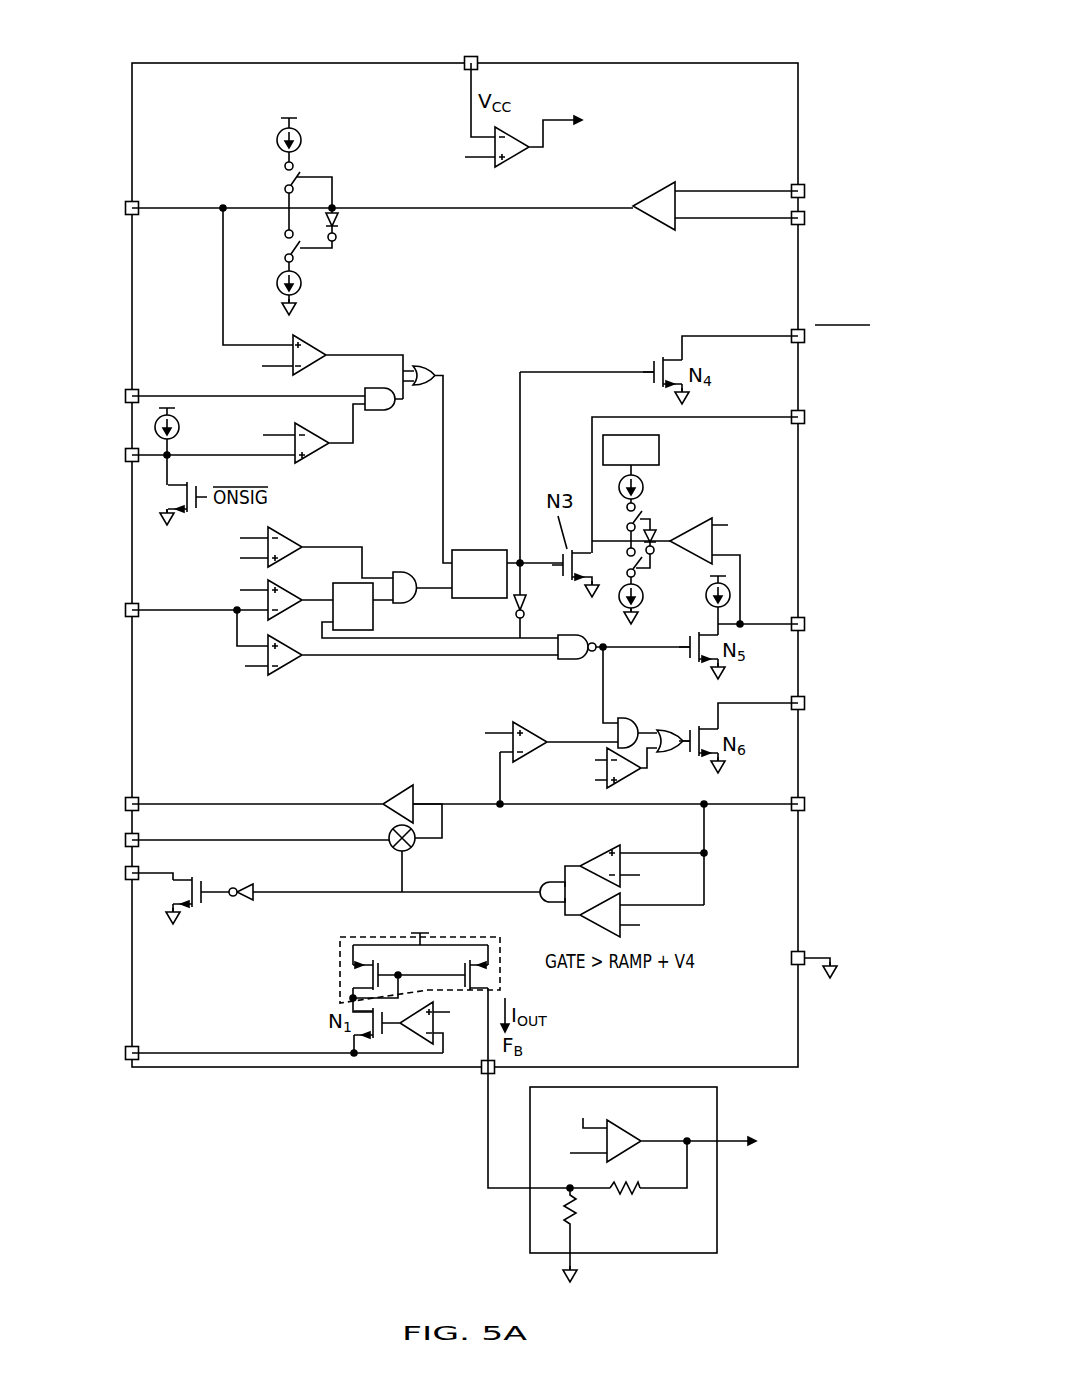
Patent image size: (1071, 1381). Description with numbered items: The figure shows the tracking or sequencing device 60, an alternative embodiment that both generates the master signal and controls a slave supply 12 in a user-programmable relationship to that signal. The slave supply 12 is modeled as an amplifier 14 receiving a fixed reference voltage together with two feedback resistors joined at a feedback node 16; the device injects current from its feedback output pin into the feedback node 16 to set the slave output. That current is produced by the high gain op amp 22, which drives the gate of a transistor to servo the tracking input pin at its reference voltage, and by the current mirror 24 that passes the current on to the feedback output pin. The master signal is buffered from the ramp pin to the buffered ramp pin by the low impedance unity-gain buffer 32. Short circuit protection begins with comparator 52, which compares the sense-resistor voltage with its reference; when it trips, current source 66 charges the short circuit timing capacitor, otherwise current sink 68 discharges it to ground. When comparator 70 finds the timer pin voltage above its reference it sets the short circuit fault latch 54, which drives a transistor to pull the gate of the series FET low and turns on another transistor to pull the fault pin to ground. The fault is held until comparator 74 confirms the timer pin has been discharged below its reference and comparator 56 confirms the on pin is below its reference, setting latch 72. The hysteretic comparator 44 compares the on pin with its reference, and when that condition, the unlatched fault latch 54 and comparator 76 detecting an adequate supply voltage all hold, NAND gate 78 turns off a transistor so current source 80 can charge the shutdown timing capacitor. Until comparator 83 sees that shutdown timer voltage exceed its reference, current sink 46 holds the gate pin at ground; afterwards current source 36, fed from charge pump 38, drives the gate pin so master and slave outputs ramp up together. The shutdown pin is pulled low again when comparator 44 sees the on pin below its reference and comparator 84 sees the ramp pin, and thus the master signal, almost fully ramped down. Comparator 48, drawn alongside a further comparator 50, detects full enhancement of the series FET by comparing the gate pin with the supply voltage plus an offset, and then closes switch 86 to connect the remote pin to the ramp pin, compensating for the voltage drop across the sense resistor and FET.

The tracking or sequencing device 60 is at (183, 63).
The current source 66 is at (303, 143).
The current sink 68 is at (303, 286).
The comparator 76 is at (520, 156).
The comparator 52 is at (660, 232).
The comparator 70 is at (325, 346).
The comparator 74 is at (300, 538).
The comparator 56 is at (300, 592).
The latch 72 is at (350, 634).
The short circuit fault latch 54 is at (480, 549).
The hysteretic comparator 44 is at (283, 676).
The charge pump 38 is at (660, 450).
The current source 36 is at (644, 492).
The current sink 46 is at (644, 600).
The comparator 83 is at (714, 548).
The current source 80 is at (731, 598).
The NAND gate 78 is at (576, 660).
The comparator 84 is at (533, 722).
The buffer 32 is at (397, 791).
The switch 86 is at (386, 829).
The comparator 50 is at (606, 852).
The comparator 48 is at (600, 904).
The current mirror 24 is at (340, 972).
The op amp 22 is at (418, 1036).
The slave supply 12 is at (722, 1218).
The amplifier 14 is at (629, 1129).
The feedback node 16 is at (562, 1192).